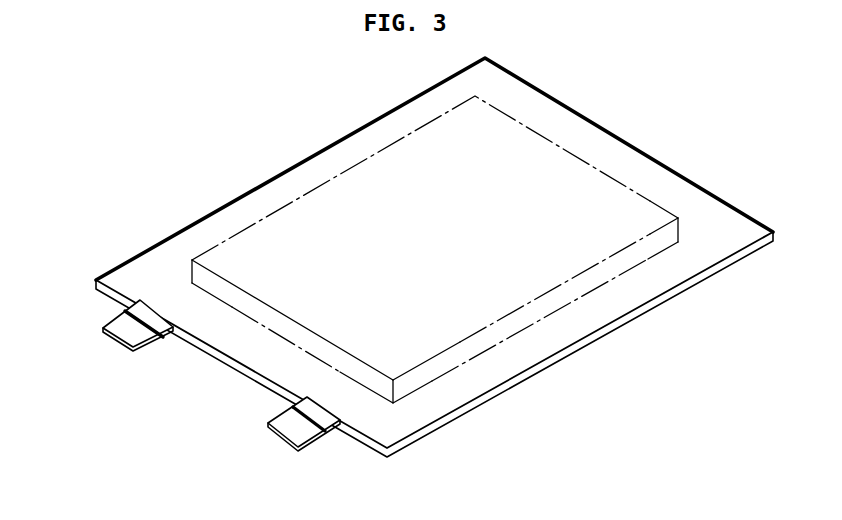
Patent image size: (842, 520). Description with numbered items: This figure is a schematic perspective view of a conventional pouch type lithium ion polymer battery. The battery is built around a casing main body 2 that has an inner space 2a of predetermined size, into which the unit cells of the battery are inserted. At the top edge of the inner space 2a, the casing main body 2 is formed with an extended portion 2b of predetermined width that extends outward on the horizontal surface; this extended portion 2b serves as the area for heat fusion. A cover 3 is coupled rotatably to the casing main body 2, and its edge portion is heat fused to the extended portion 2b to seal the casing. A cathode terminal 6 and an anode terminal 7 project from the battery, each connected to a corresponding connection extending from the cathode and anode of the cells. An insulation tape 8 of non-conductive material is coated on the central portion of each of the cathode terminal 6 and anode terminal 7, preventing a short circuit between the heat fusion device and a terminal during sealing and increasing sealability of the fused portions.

The casing main body 2 is at (407, 278).
The inner space 2a is at (370, 172).
The extended portion 2b is at (257, 200).
The cover 3 is at (436, 254).
The cathode terminal 6 is at (125, 335).
The anode terminal 7 is at (290, 432).
The insulation tape 8 is at (138, 315).